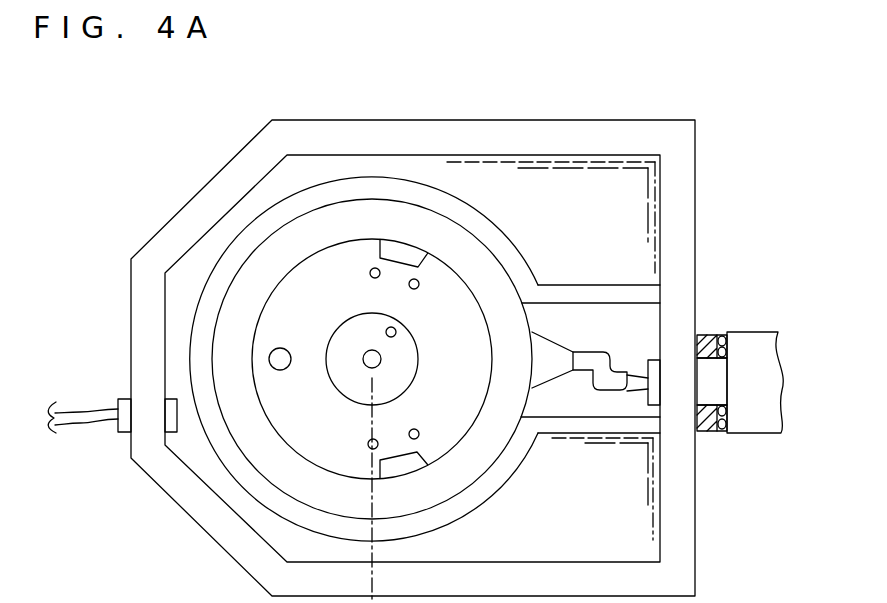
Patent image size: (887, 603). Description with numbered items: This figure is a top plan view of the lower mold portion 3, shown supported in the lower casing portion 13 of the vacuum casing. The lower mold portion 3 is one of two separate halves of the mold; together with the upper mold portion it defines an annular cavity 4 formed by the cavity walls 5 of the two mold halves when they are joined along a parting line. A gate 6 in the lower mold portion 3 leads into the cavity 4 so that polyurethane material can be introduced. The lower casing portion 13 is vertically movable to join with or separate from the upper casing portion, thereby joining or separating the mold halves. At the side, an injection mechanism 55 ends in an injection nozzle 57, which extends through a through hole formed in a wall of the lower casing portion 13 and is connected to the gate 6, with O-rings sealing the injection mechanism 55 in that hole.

The lower mold portion 3 is at (343, 192).
The lower casing portion 13 is at (413, 135).
The annular cavity 4 is at (473, 262).
The cavity walls 5 is at (503, 268).
The gate 6 is at (548, 352).
The injection nozzle 57 is at (648, 362).
The injection mechanism 55 is at (760, 338).